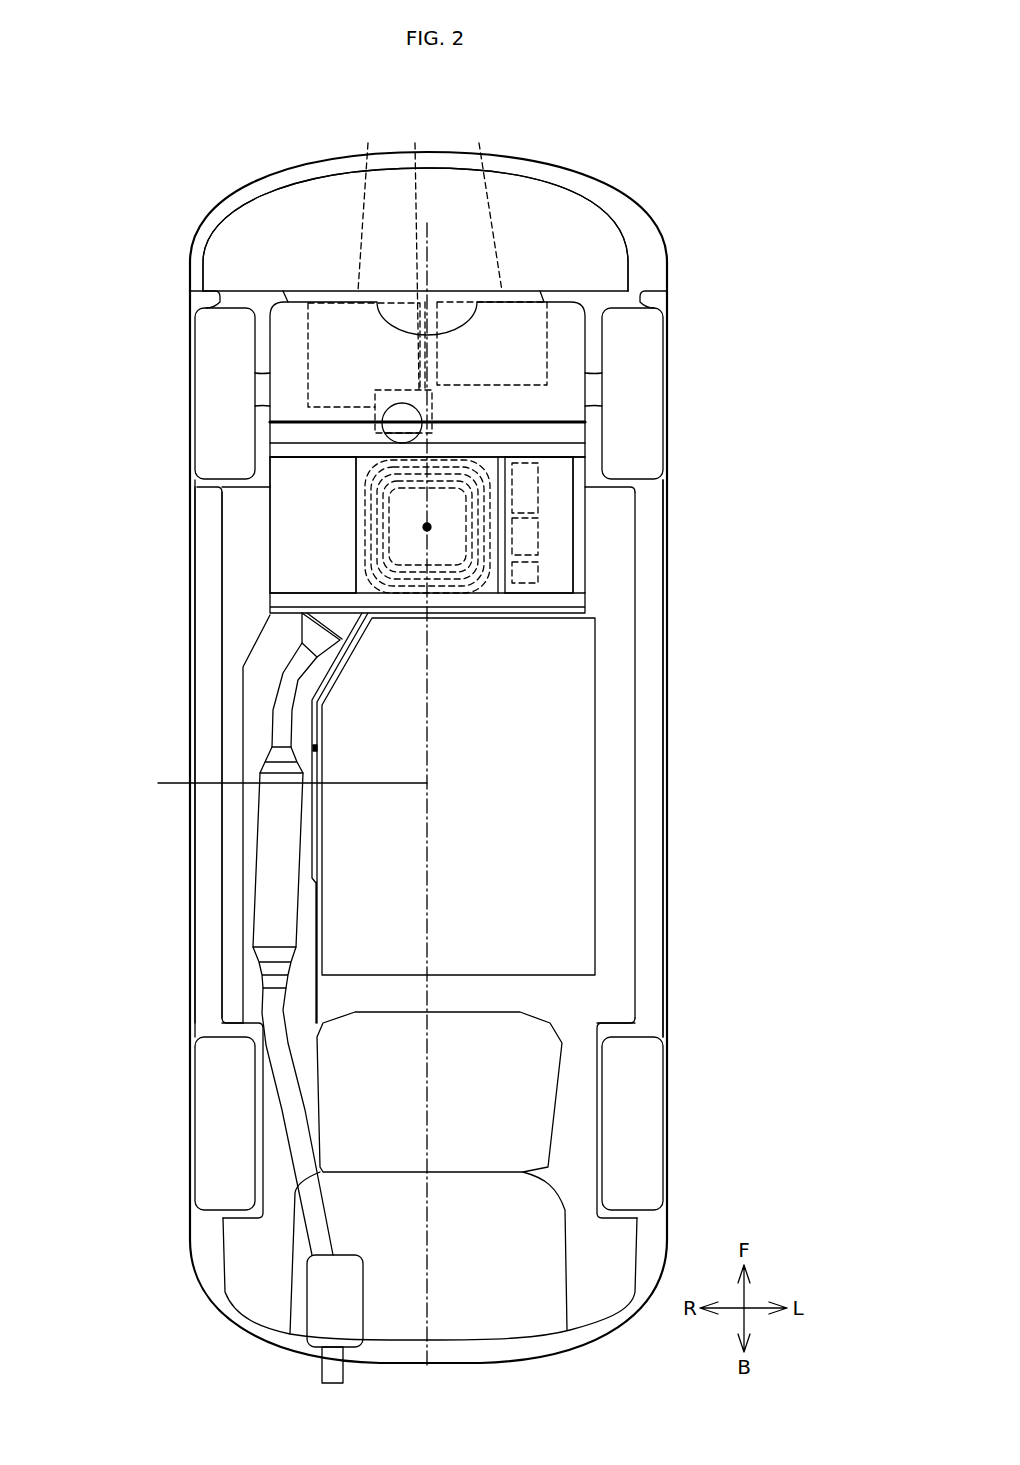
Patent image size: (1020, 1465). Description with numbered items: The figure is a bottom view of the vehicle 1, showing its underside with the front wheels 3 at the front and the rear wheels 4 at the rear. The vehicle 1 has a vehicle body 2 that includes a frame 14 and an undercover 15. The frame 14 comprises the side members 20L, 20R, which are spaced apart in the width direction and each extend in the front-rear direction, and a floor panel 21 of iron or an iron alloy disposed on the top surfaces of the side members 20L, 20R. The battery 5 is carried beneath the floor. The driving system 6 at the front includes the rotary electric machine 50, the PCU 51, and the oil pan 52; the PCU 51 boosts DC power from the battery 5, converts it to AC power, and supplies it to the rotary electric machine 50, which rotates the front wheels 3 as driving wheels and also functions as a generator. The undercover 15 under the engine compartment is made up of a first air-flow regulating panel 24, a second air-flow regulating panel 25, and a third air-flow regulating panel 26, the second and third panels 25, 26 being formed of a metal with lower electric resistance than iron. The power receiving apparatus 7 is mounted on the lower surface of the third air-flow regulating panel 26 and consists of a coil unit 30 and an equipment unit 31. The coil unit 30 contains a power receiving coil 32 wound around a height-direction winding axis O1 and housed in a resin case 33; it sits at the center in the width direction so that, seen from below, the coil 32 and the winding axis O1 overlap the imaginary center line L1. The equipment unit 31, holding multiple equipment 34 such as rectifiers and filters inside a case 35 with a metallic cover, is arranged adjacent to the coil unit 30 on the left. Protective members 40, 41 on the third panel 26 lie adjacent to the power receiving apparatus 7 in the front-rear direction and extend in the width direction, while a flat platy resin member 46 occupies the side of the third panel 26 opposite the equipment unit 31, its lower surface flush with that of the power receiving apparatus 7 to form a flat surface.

The vehicle 1 is at (684, 183).
The vehicle body 2 is at (665, 327).
The front wheels 3 is at (208, 418).
The rear wheels 4 is at (208, 1170).
The battery 5 is at (572, 830).
The driving system 6 is at (428, 235).
The power receiving apparatus 7 is at (641, 525).
The frame 14 is at (483, 758).
The undercover 15 is at (347, 380).
The side member 20R is at (208, 660).
The side member 20L is at (647, 736).
The floor panel 21 is at (622, 698).
The first air-flow regulating panel 24 is at (238, 262).
The second air-flow regulating panel 25 is at (287, 365).
The third air-flow regulating panel 26 is at (348, 525).
The coil unit 30 is at (622, 559).
The equipment unit 31 is at (630, 521).
The power receiving coil 32 is at (489, 548).
The case 33 is at (497, 587).
The equipment 34 is at (541, 478).
The case 35 is at (562, 505).
The protective member 40 is at (560, 450).
The protective member 41 is at (547, 602).
The resin member 46 is at (282, 541).
The rotary electric machine 50 is at (367, 205).
The PCU 51 is at (484, 205).
The oil pan 52 is at (414, 254).
The winding axis O1 is at (427, 527).
The imaginary line L1 is at (276, 783).